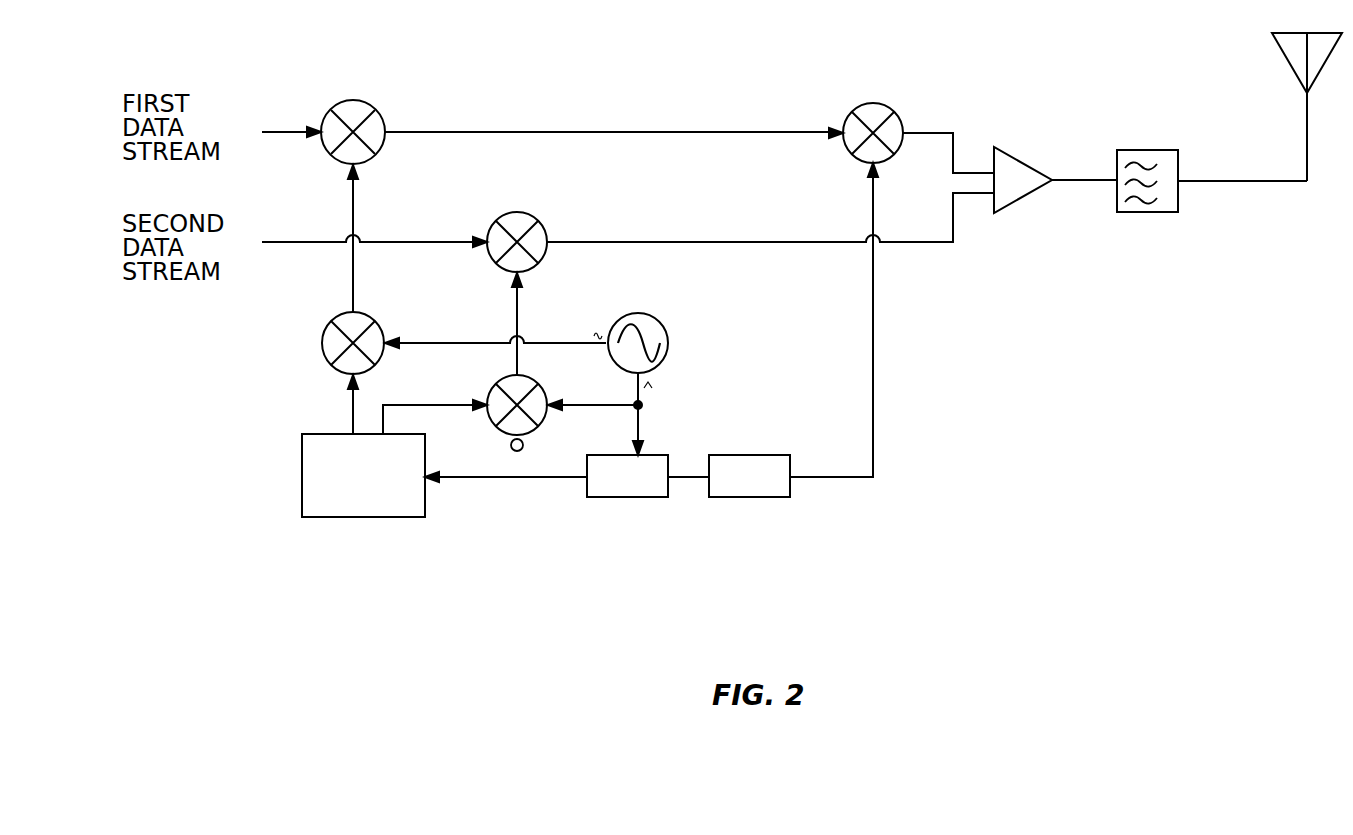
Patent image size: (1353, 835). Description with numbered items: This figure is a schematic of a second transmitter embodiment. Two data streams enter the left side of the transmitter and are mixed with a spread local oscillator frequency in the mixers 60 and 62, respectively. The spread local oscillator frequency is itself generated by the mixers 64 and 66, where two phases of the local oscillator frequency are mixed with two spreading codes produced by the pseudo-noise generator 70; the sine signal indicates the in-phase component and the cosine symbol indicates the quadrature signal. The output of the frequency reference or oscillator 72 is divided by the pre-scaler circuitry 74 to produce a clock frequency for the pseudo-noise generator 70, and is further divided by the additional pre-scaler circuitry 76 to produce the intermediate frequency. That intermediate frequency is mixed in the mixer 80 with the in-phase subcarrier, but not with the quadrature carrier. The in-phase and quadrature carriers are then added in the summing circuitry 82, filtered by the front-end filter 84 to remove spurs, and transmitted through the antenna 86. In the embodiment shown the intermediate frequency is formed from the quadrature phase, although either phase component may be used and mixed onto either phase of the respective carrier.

The mixer 60 is at (370, 108).
The mixer 62 is at (535, 216).
The mixer 64 is at (372, 320).
The mixer 66 is at (535, 380).
The pseudo-noise generator 70 is at (302, 458).
The oscillator 72 is at (618, 320).
The pre-scaler circuitry 74 is at (627, 497).
The additional pre-scaler circuitry 76 is at (755, 497).
The mixer 80 is at (890, 108).
The summing circuitry 82 is at (1027, 160).
The front-end filter 84 is at (1125, 150).
The antenna 86 is at (1287, 57).